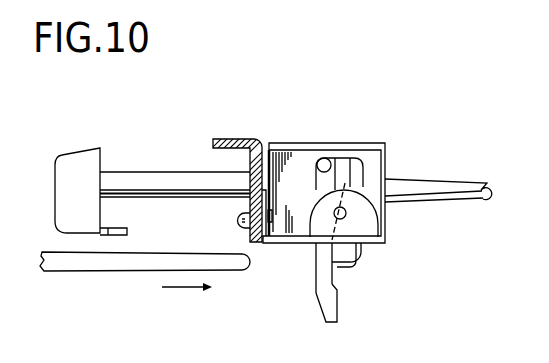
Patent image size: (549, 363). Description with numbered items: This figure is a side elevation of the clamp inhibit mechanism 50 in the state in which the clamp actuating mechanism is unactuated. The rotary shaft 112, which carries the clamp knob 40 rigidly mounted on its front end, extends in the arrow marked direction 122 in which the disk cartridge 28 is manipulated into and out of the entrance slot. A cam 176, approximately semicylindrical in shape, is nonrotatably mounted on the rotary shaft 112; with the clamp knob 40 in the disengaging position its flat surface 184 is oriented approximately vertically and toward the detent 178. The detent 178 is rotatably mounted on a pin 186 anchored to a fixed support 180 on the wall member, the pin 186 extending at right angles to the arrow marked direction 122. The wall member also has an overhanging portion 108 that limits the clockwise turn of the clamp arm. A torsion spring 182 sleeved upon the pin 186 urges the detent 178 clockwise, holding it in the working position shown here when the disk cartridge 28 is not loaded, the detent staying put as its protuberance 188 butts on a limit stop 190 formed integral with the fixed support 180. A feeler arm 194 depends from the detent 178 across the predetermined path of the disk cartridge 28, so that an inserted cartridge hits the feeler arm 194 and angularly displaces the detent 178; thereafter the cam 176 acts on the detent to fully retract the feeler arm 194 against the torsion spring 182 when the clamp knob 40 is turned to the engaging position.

The disk cartridge 28 is at (110, 266).
The clamp knob 40 is at (73, 157).
The clamp inhibit mechanism 50 is at (421, 141).
The overhanging portion 108 is at (230, 137).
The rotary shaft 112 is at (459, 186).
The arrow marked direction 122 is at (183, 290).
The cam 176 is at (353, 137).
The detent 178 is at (362, 266).
The fixed support 180 is at (378, 214).
The torsion spring 182 is at (330, 263).
The flat surface 184 is at (287, 152).
The pin 186 is at (347, 217).
The protuberance 188 is at (325, 158).
The slot 190 is at (345, 165).
The feeler arm 194 is at (337, 313).